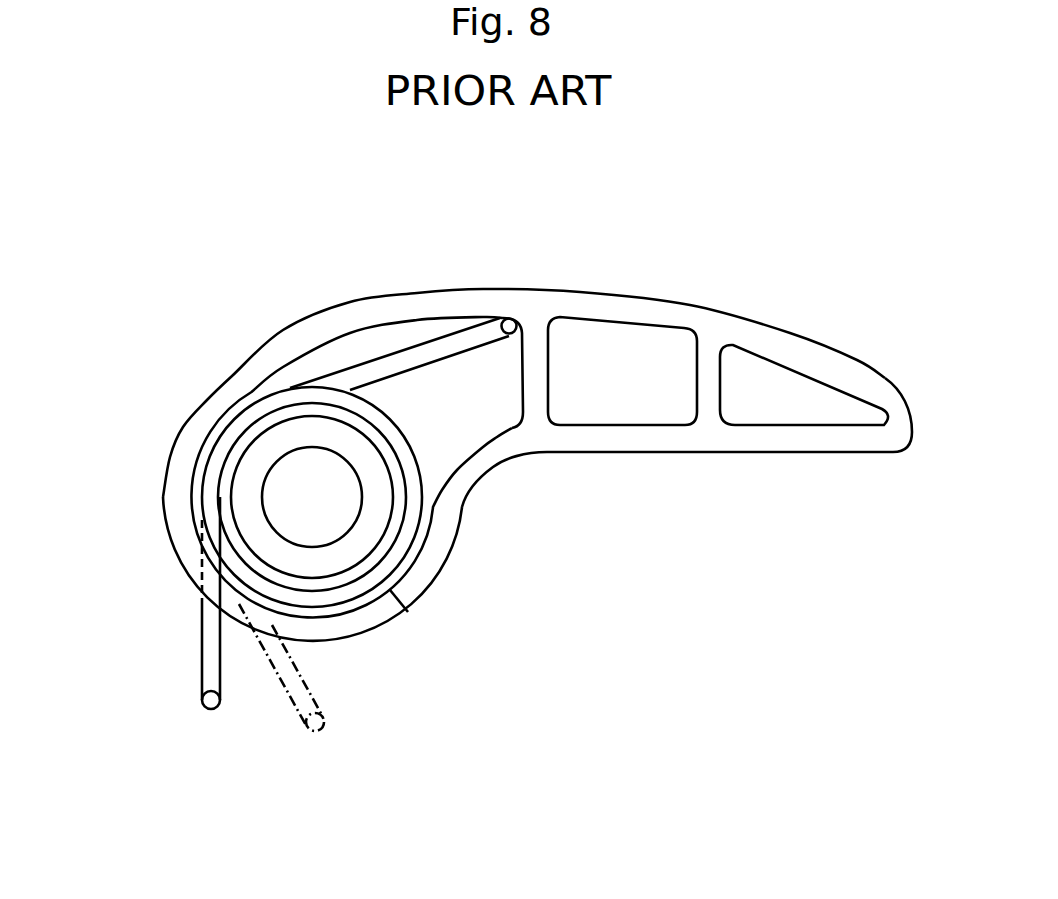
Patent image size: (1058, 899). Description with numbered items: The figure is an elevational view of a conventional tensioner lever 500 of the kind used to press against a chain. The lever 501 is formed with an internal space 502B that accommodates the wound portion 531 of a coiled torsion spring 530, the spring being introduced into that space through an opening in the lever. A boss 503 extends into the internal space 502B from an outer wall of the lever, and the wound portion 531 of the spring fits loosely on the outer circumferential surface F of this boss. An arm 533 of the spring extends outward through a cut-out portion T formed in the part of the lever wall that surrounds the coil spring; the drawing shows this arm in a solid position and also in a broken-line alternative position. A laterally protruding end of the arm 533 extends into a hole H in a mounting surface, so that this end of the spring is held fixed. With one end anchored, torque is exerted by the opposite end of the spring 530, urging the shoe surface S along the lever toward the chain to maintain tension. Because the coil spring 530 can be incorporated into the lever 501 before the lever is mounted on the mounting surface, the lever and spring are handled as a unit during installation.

The tensioner lever 500 is at (480, 505).
The lever 501 is at (687, 383).
The internal space 502B is at (490, 415).
The boss 503 is at (221, 488).
The coiled torsion spring 530 is at (313, 355).
The wound portion 531 is at (267, 407).
The arm 533 is at (203, 670).
The hole H is at (284, 464).
The outer circumferential surface F is at (350, 417).
The shoe surface S is at (710, 308).
The cut-out portion T is at (353, 632).